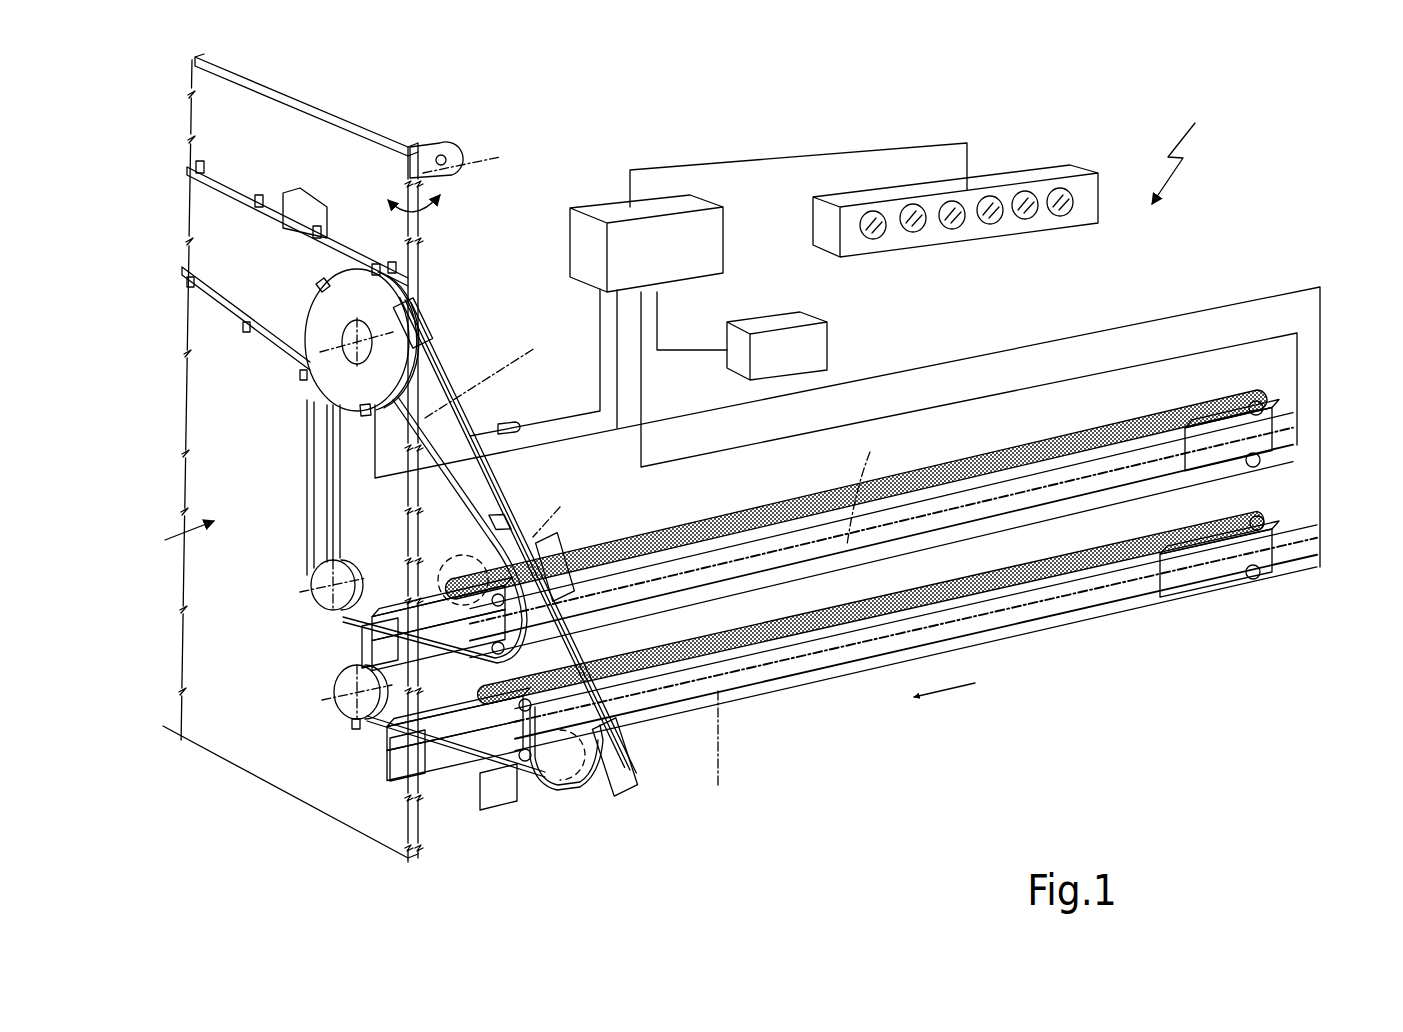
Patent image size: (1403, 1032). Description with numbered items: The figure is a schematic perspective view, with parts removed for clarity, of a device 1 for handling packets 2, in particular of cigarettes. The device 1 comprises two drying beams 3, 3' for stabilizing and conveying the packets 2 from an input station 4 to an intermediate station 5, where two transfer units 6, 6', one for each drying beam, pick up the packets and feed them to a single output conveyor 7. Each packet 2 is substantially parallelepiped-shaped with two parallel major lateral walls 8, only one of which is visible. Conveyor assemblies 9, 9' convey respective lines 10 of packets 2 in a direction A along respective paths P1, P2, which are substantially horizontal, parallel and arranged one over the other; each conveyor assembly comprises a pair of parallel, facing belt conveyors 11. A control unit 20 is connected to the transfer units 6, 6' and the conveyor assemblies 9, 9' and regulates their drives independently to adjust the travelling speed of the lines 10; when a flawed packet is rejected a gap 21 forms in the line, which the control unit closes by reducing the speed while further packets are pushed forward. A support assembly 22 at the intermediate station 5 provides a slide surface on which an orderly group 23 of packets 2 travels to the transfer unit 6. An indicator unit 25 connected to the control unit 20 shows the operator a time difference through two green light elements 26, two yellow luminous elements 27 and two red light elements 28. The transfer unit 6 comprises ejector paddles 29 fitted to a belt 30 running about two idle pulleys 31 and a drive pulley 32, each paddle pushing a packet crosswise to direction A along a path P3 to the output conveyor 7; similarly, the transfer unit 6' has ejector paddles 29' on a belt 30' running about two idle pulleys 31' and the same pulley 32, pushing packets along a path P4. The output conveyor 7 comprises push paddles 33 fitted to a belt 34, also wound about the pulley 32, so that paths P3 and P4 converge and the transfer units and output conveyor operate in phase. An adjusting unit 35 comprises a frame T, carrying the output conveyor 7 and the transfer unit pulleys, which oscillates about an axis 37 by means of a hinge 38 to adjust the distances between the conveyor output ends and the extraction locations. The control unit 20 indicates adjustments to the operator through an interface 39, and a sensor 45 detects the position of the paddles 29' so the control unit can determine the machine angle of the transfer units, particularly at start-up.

The device for handling packets 1 is at (1182, 152).
The packet 2 is at (315, 191).
The drying beam 3 is at (857, 439).
The drying beam 3' is at (871, 654).
The input station 4 is at (1342, 456).
The intermediate station 5 is at (434, 832).
The transfer unit 6 is at (308, 585).
The transfer unit 6' is at (339, 710).
The output conveyor 7 is at (240, 180).
The major lateral wall 8 is at (303, 217).
The conveyor assembly 9 is at (857, 494).
The conveyor assembly 9' is at (871, 614).
The line of packets 10 is at (797, 673).
The belt conveyor 11 is at (747, 593).
The control unit 20 is at (570, 233).
The gap 21 is at (1230, 570).
The support assembly 22 is at (431, 657).
The orderly group of packets 23 is at (388, 606).
The indicator unit 25 is at (967, 208).
The green light element 26 is at (988, 226).
The yellow luminous element 27 is at (912, 232).
The red light element 28 is at (867, 239).
The ejector paddle 29 is at (401, 588).
The ejector paddle 29' is at (458, 329).
The belt 30 is at (282, 485).
The belt 30' is at (481, 543).
The idle pulley 31 is at (384, 581).
The idle pulley 31' is at (437, 764).
The drive pulley 32 is at (354, 290).
The push paddle 33 is at (259, 196).
The belt 34 is at (238, 200).
The adjusting unit 35 is at (452, 136).
The axis 37 is at (470, 150).
The hinge 38 is at (432, 146).
The interface 39 is at (776, 340).
The sensor 45 is at (512, 424).
The path P1 is at (870, 485).
The path P2 is at (718, 751).
The path P3 is at (480, 378).
The path P4 is at (555, 510).
The direction A is at (944, 703).
The frame T is at (168, 535).